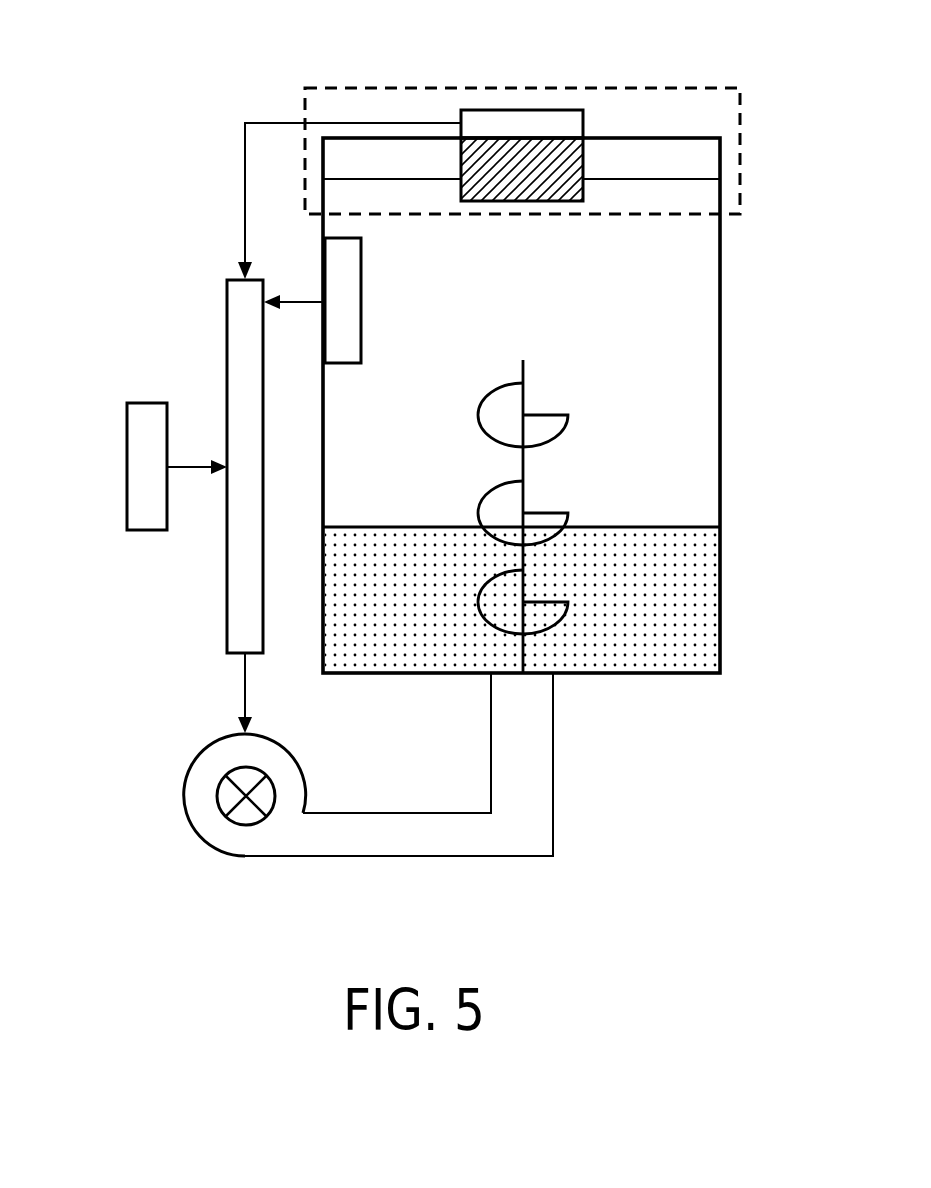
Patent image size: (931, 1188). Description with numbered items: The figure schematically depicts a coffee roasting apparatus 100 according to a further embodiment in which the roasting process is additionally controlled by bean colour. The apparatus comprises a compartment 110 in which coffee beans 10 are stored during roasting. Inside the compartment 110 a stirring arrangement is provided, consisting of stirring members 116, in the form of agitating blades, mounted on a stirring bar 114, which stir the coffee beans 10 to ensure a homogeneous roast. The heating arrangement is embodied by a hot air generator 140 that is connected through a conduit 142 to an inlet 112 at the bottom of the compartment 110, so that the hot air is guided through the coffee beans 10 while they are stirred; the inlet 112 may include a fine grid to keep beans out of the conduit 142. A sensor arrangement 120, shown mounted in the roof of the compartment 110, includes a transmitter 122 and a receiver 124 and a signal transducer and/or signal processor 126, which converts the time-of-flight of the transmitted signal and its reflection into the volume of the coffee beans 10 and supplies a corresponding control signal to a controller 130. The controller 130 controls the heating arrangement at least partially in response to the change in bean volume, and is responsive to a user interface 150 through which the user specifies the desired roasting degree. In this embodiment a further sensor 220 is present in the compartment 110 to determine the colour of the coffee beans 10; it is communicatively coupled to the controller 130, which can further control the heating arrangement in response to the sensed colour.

The coffee roasting apparatus 100 is at (708, 796).
The compartment 110 is at (720, 372).
The coffee beans 10 is at (706, 607).
The inlet 112 is at (523, 675).
The stirring bar 114 is at (523, 373).
The stirring members 116 is at (487, 410).
The sensor arrangement 120 is at (383, 88).
The transmitter 122 is at (515, 190).
The receiver 124 is at (395, 180).
The signal transducer and/or signal processor 126 is at (495, 110).
The controller 130 is at (227, 318).
The hot air generator 140 is at (243, 858).
The conduit 142 is at (447, 858).
The user interface 150 is at (127, 430).
The further sensor 220 is at (323, 268).